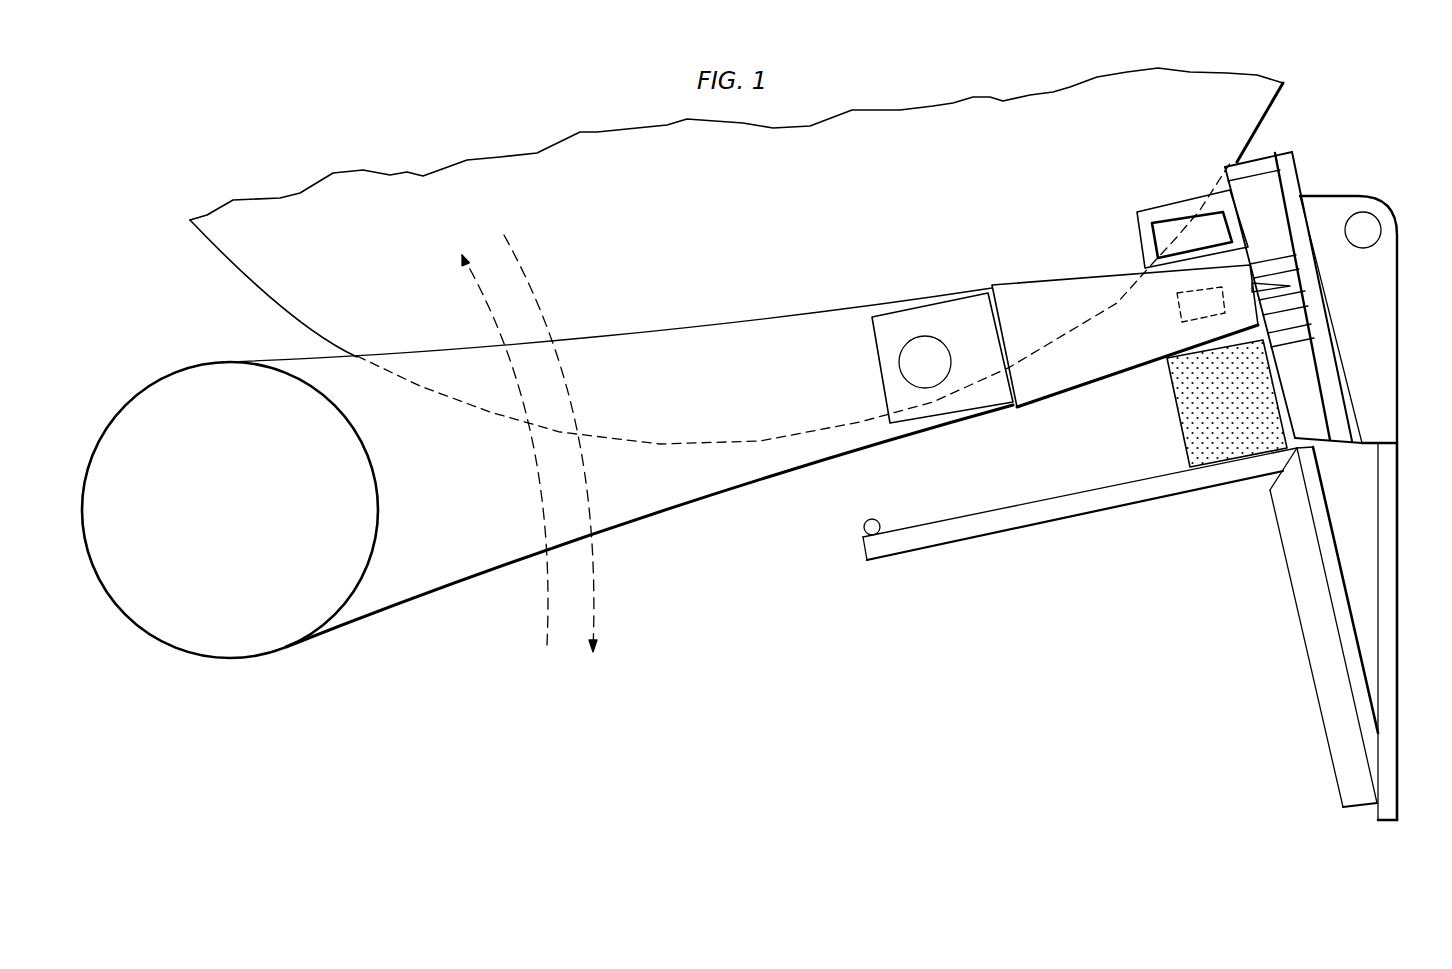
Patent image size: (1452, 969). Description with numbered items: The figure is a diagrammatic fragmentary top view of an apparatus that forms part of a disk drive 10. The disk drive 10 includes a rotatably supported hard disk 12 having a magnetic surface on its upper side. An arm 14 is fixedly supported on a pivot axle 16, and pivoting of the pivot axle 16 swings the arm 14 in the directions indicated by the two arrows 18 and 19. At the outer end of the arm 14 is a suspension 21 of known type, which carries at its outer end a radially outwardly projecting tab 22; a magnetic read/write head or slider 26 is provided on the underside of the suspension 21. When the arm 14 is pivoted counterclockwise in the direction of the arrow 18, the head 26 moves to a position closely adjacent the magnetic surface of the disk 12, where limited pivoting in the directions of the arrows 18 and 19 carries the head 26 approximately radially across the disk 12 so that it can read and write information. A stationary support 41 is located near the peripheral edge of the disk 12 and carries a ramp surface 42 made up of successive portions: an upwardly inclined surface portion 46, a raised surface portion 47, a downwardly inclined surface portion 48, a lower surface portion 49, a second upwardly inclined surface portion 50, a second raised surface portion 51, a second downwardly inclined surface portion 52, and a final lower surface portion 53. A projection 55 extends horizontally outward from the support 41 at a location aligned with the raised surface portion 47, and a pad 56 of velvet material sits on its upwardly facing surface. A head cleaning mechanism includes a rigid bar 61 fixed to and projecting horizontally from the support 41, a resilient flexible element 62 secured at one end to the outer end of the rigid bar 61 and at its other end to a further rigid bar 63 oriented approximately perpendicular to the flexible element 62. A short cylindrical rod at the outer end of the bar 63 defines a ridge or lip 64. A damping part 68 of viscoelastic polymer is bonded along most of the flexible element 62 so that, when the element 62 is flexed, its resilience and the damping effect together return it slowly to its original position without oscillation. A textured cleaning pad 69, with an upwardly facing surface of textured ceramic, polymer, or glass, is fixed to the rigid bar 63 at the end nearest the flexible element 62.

The disk drive 10 is at (548, 97).
The hard disk 12 is at (724, 246).
The arm 14 is at (633, 505).
The pivot axle 16 is at (216, 524).
The arrow 18 is at (545, 478).
The arrow 19 is at (596, 590).
The suspension 21 is at (1047, 285).
The tab 22 is at (1306, 291).
The magnetic read/write head 26 is at (1178, 317).
The stationary support 41 is at (1352, 200).
The ramp surface 42 is at (1220, 150).
The upwardly inclined surface portion 46 is at (1272, 162).
The raised surface portion 47 is at (1281, 182).
The downwardly inclined surface portion 48 is at (1277, 262).
The lower surface portion 49 is at (1313, 262).
The upwardly inclined surface portion 50 is at (1312, 302).
The raised surface portion 51 is at (1312, 322).
The downwardly inclined surface portion 52 is at (1298, 343).
The lower surface portion 53 is at (1318, 432).
The projection 55 is at (1176, 205).
The pad 56 is at (1152, 236).
The rigid bar 61 is at (1394, 657).
The resilient flexible element 62 is at (1325, 542).
The rigid bar 63 is at (1104, 502).
The lip 64 is at (866, 530).
The damping part 68 is at (1312, 655).
The cleaning pad 69 is at (1175, 425).